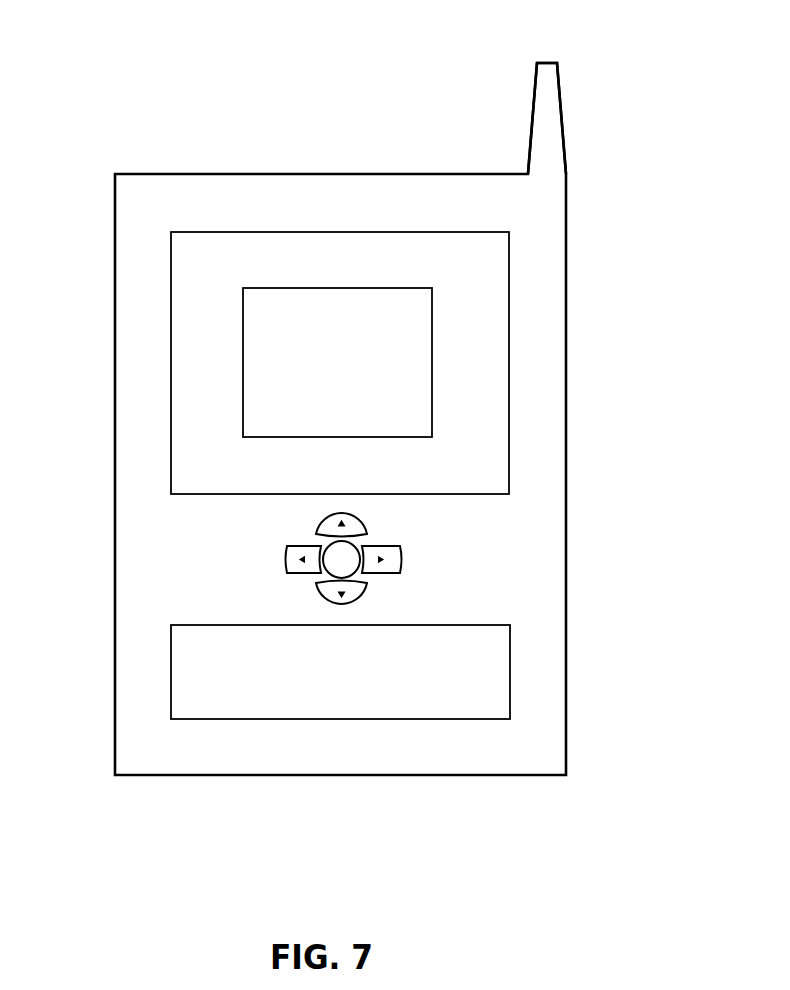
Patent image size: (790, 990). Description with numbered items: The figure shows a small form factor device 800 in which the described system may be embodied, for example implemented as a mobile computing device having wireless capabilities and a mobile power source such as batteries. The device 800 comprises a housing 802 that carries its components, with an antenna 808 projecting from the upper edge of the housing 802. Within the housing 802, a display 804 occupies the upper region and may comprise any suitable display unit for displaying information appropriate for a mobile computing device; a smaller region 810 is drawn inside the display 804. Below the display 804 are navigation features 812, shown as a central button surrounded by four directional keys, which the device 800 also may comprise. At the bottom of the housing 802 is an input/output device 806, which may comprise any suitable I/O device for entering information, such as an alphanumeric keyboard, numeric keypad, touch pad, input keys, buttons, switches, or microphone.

The small form factor device 800 is at (377, 396).
The housing 802 is at (568, 476).
The display 804 is at (512, 250).
The input/output (I/O) device 806 is at (512, 662).
The antenna 808 is at (533, 112).
The display window 810 is at (433, 384).
The navigation features 812 is at (428, 549).